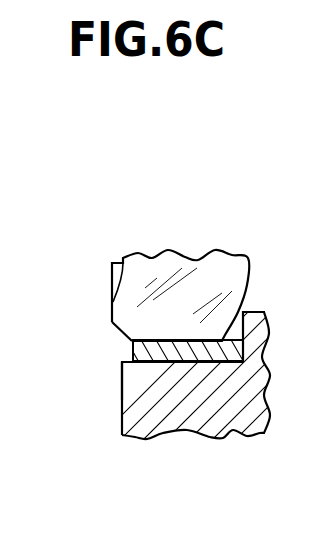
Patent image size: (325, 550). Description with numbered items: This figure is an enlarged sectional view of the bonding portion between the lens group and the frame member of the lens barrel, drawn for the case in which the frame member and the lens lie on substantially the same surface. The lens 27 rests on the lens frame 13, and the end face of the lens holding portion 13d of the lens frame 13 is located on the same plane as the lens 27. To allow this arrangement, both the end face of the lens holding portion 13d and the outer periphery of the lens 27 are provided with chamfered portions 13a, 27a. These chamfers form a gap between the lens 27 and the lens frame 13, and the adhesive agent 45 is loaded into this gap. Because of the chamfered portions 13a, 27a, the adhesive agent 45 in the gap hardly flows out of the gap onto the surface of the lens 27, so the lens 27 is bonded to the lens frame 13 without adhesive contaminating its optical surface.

The lens 27 is at (138, 285).
The chamfered portion 27a is at (118, 336).
The adhesive agent 45 is at (132, 352).
The lens frame 13 is at (223, 407).
The chamfered portion 13a is at (121, 366).
The lens holding portion 13d is at (153, 362).